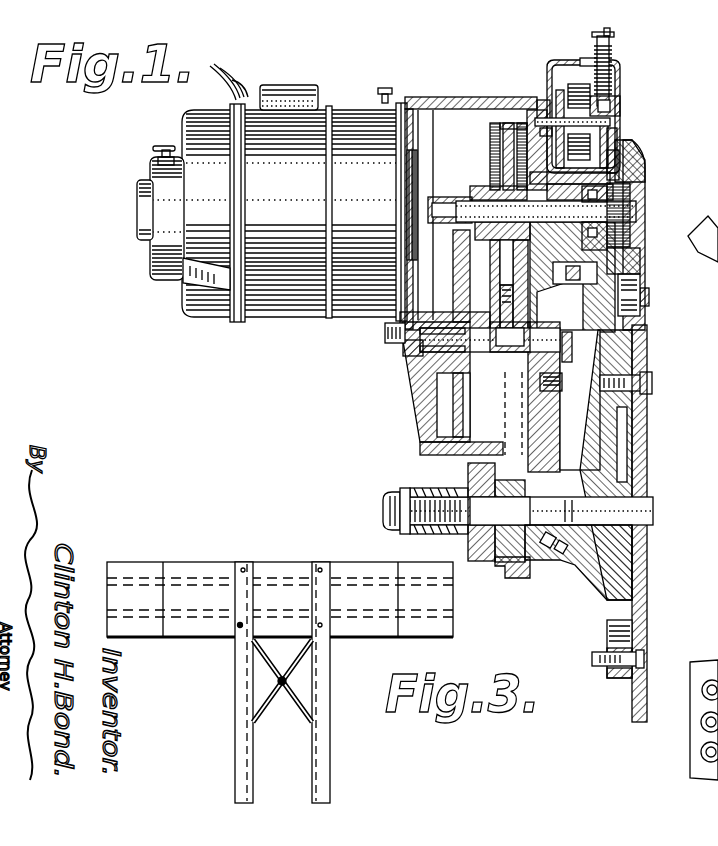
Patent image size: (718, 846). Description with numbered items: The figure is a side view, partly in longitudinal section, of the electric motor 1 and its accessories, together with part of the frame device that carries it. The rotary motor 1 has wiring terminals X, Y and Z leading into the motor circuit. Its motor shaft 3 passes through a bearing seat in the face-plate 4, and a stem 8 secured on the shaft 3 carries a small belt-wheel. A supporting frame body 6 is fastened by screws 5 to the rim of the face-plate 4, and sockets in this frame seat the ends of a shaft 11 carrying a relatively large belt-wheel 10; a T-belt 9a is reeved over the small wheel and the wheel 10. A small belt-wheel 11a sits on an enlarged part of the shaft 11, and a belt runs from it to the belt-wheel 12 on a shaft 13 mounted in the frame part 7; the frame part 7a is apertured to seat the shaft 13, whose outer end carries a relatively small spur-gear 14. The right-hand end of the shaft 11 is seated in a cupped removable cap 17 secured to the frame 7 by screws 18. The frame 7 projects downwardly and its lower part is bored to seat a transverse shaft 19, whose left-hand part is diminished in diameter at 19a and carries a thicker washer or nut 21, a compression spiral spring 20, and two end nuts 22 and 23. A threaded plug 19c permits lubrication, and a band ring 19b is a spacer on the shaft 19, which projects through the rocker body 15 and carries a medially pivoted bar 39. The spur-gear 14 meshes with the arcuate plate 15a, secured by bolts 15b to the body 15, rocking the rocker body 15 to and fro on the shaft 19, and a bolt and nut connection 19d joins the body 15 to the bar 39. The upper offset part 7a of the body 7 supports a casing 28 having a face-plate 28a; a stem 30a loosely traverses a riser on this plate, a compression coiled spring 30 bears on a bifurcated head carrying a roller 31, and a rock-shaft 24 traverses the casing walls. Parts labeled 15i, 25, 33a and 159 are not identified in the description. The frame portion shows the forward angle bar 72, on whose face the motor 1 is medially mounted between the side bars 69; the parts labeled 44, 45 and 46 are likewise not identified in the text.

In FIG. 1, the rotary motor 1 is at (268, 203).
In FIG. 1, the wiring terminal Z is at (224, 72).
In FIG. 1, the wiring terminal X is at (236, 72).
In FIG. 1, the wiring terminal Y is at (232, 82).
In FIG. 1, the motor shaft 3 is at (408, 163).
In FIG. 1, the face-plate 4 is at (403, 100).
In FIG. 1, the screws 5 is at (386, 330).
In FIG. 1, the supporting frame body 6 is at (408, 364).
In FIG. 1, the frame part 7 is at (530, 396).
In FIG. 1, the upper offset frame part 7a is at (635, 256).
In FIG. 1, the stem 8 is at (445, 192).
In FIG. 1, the T-belt 9a is at (467, 188).
In FIG. 1, the large belt-wheel 10 is at (455, 392).
In FIG. 1, the shaft 11 is at (405, 352).
In FIG. 1, the small belt-wheel 11a is at (496, 346).
In FIG. 1, the belt-wheel 12 is at (488, 132).
In FIG. 1, the shaft 13 is at (503, 226).
In FIG. 1, the spur-gear 14 is at (640, 210).
In FIG. 1, the rocker body 15 is at (642, 266).
In FIG. 1, the arcuate plate 15a is at (642, 176).
In FIG. 1, the plate flange 15i is at (626, 164).
In FIG. 1, the bolts 15b is at (645, 296).
In FIG. 1, the cupped removable cap 17 is at (572, 350).
In FIG. 1, the screws 18 is at (560, 390).
In FIG. 1, the transverse shaft 19 is at (652, 380).
In FIG. 1, the diminished-diameter shaft part 19a is at (448, 526).
In FIG. 1, the band ring 19b is at (568, 548).
In FIG. 1, the threaded plug 19c is at (530, 556).
In FIG. 1, the bolt and nut connection 19d is at (648, 658).
In FIG. 1, the compression spiral spring 20 is at (422, 528).
In FIG. 1, the thicker washer or nut 21 is at (468, 472).
In FIG. 1, the nut 22 is at (386, 506).
In FIG. 1, the nut 23 is at (406, 492).
In FIG. 1, the rock-shaft 24 is at (548, 106).
In FIG. 1, the switch member 25 is at (612, 144).
In FIG. 1, the casing 28 is at (560, 62).
In FIG. 1, the face-plate 28a is at (580, 60).
In FIG. 1, the compression coiled spring 30 is at (609, 36).
In FIG. 1, the stem 30a is at (616, 56).
In FIG. 1, the roller 31 is at (616, 96).
In FIG. 1, the spring 33a is at (602, 158).
In FIG. 1, the bar 39 is at (647, 442).
In FIG. 1, the foot 159 is at (608, 634).
In FIG. 3, the forward angle bar 72 is at (156, 638).
In FIG. 3, the post 44 is at (236, 684).
In FIG. 3, the bolt 45 is at (238, 627).
In FIG. 3, the cross brace 46 is at (298, 706).
In FIG. 3, the side bars 69 is at (238, 744).